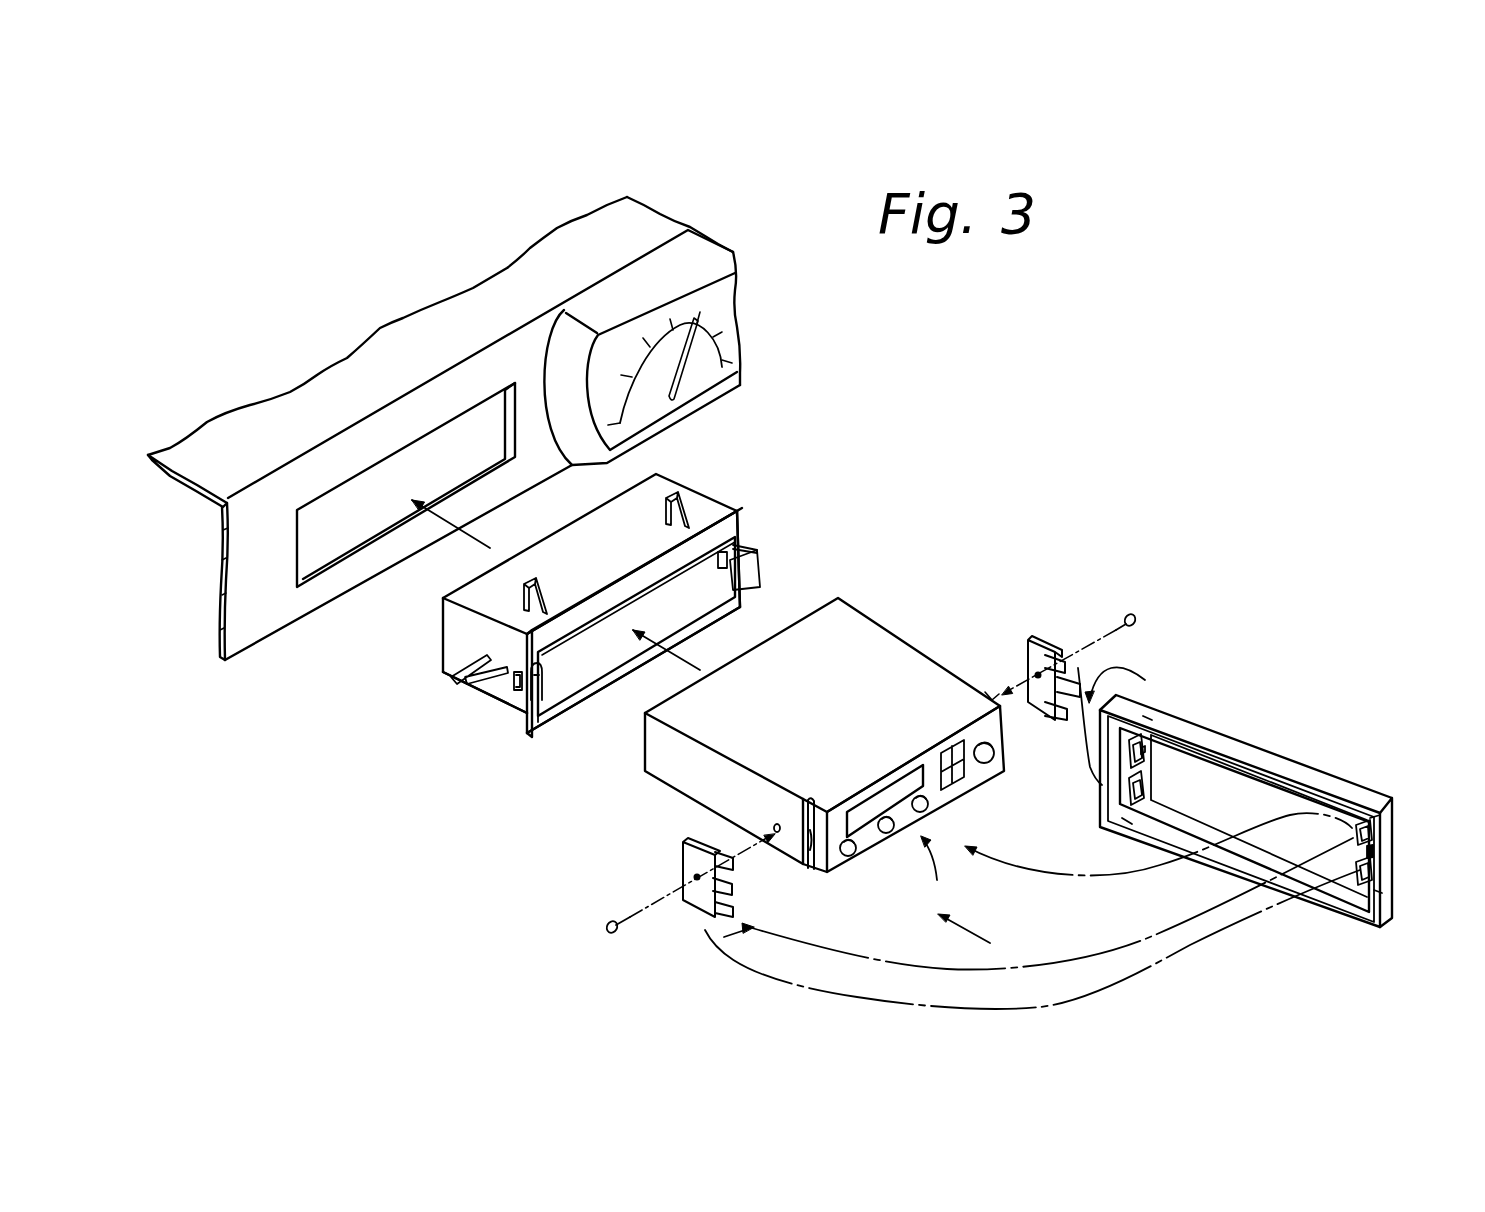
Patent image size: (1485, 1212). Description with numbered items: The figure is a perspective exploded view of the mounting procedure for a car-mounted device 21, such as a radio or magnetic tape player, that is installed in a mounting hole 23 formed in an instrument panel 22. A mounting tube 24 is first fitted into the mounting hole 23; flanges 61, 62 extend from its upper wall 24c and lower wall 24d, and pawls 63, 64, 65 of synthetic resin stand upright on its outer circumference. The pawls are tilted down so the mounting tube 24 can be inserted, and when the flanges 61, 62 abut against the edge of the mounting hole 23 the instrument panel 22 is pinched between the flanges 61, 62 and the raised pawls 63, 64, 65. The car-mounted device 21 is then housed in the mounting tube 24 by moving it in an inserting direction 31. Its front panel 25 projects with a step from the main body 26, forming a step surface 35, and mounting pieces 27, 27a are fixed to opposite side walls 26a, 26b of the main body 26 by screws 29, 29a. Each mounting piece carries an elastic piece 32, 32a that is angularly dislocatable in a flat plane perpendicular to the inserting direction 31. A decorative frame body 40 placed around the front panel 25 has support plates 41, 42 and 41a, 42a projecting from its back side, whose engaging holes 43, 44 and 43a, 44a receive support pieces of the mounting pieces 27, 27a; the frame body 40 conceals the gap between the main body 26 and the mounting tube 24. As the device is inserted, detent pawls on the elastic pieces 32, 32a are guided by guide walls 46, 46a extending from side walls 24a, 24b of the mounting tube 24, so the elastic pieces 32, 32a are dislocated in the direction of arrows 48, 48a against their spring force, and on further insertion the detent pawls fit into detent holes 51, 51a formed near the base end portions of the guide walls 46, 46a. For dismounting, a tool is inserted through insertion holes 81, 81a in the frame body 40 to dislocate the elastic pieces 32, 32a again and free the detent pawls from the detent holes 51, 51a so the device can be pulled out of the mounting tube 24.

The car-mounted device 21 is at (950, 869).
The instrument panel 22 is at (272, 627).
The mounting hole 23 is at (322, 568).
The mounting tube 24 is at (614, 613).
The side wall of mounting tube 24a is at (445, 640).
The side wall of mounting tube 24b is at (750, 600).
The upper wall of mounting tube 24c is at (572, 532).
The lower wall of mounting tube 24d is at (483, 695).
The front panel 25 is at (863, 857).
The main body 26 is at (804, 730).
The side wall of main body 26a is at (705, 782).
The side wall of main body 26b is at (947, 657).
The mounting piece 27 is at (687, 862).
The mounting piece 27a is at (1028, 645).
The screw 29 is at (606, 915).
The screw 29a is at (1134, 618).
The inserting direction 31 is at (965, 925).
The elastic piece 32 is at (730, 887).
The elastic piece 32a is at (1075, 708).
The step surface 35 is at (805, 852).
The frame body 40 is at (1260, 817).
The support plate 41 is at (1373, 823).
The support plate 41a is at (1145, 732).
The support plate 42 is at (1383, 893).
The support plate 42a is at (1132, 823).
The engaging hole 43 is at (1368, 820).
The engaging hole 43a is at (1138, 752).
The engaging hole 44 is at (1367, 884).
The engaging hole 44a is at (1136, 803).
The guide wall 46 is at (543, 705).
The guide wall 46a is at (754, 558).
The arrow 48 is at (724, 937).
The arrow 48a is at (1138, 681).
The detent hole 51 is at (518, 692).
The detent hole 51a is at (748, 548).
The flange 61 is at (625, 577).
The flange 62 is at (590, 690).
The pawl 63 is at (546, 590).
The pawl 64 is at (692, 507).
The pawl 65 is at (483, 653).
The insertion hole 81 is at (1374, 860).
The insertion hole 81a is at (1165, 786).